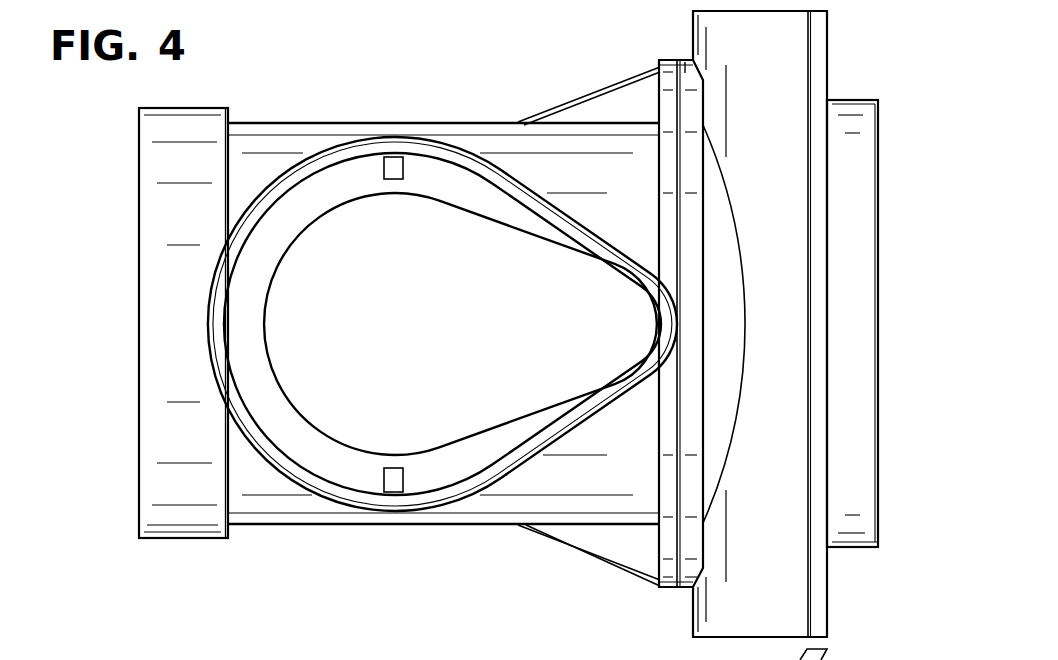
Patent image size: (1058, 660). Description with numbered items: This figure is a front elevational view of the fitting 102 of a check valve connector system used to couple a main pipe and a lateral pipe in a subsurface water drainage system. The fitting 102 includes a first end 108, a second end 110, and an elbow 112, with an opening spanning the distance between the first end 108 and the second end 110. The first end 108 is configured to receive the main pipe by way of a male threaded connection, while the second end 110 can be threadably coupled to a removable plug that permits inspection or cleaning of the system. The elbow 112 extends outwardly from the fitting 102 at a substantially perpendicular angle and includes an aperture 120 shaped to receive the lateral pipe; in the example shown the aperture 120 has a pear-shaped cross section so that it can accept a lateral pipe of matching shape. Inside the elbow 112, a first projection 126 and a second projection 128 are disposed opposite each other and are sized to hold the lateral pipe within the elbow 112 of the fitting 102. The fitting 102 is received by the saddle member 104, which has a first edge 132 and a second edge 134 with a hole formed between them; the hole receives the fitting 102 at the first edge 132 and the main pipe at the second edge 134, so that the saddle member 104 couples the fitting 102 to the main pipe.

The fitting 102 is at (289, 142).
The saddle member 104 is at (792, 52).
The first end 108 is at (665, 100).
The second end 110 is at (160, 167).
The elbow 112 is at (445, 153).
The aperture 120 is at (360, 428).
The first projection 126 is at (393, 490).
The second projection 128 is at (396, 163).
The first edge 132 is at (685, 70).
The second edge 134 is at (867, 146).